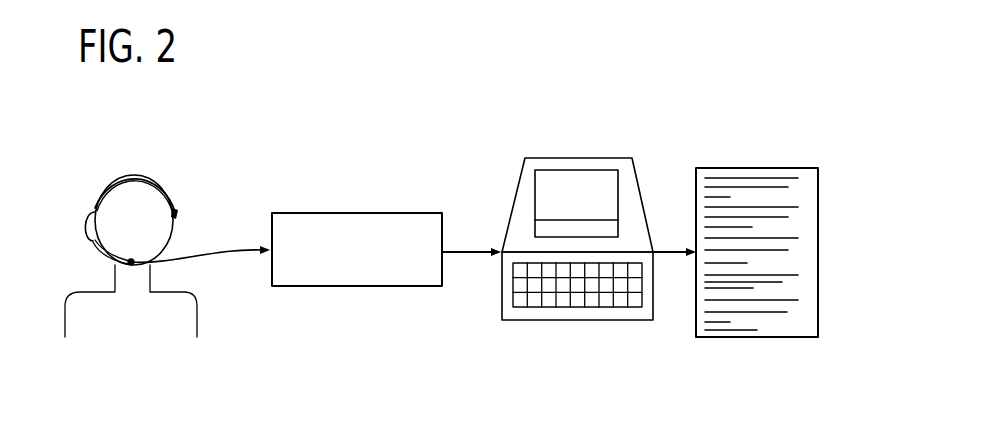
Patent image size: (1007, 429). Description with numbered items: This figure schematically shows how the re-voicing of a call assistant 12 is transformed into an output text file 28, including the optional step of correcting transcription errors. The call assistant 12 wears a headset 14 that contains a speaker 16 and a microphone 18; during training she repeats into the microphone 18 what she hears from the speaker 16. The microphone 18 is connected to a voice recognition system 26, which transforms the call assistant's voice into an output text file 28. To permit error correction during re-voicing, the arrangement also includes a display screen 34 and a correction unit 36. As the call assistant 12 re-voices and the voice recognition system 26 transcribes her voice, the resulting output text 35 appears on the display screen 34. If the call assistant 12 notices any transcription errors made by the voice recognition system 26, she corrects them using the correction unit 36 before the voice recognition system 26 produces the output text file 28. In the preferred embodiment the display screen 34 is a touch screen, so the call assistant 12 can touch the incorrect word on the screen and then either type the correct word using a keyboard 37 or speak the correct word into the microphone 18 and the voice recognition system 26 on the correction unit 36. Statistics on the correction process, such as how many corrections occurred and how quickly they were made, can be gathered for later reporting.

The call assistant 12 is at (121, 324).
The headset 14 is at (103, 189).
The speaker 16 is at (88, 234).
The microphone 18 is at (130, 268).
The voice recognition system 26 is at (355, 287).
The output text file 28 is at (820, 256).
The display screen 34 is at (535, 207).
The output text 35 is at (573, 192).
The correction unit 36 is at (577, 320).
The keyboard 37 is at (540, 303).